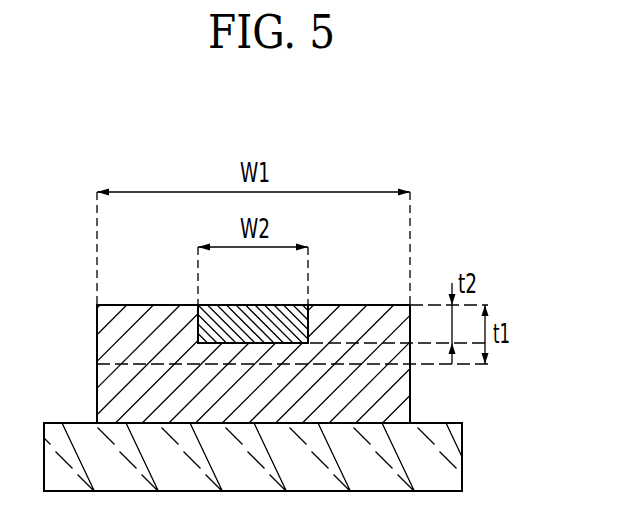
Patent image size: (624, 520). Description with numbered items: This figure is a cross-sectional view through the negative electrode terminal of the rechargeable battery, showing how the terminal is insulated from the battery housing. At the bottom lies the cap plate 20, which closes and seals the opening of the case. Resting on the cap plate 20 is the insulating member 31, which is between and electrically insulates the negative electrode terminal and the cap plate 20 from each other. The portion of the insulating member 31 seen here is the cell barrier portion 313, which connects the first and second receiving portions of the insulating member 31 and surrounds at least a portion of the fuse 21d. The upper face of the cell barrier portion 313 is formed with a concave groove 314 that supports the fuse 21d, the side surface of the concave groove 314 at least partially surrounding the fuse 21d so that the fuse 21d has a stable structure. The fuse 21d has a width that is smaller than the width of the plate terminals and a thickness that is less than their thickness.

The cap plate 20 is at (443, 467).
The insulating member 31 is at (221, 323).
The cell barrier portion 313 is at (384, 318).
The concave groove 314 is at (311, 304).
The fuse 21d is at (253, 325).